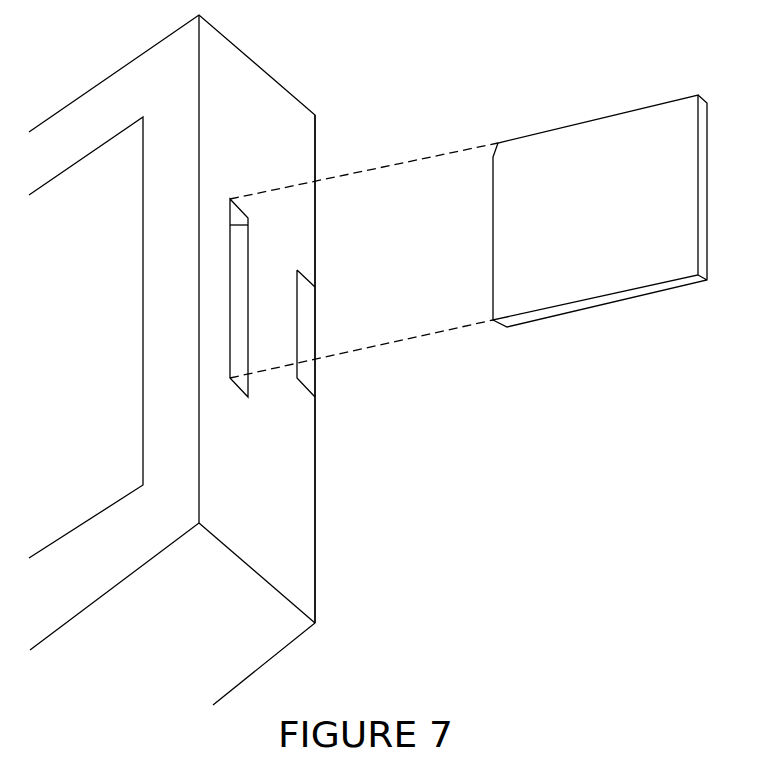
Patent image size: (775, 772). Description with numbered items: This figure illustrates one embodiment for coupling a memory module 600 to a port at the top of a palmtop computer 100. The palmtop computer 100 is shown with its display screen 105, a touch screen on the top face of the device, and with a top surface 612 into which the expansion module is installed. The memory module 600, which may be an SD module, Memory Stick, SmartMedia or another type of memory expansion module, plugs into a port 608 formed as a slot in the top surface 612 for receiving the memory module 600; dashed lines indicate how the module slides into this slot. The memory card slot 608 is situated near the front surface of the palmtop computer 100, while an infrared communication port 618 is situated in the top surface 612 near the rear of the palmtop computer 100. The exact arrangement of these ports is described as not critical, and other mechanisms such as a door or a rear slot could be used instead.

The palmtop computer 100 is at (217, 579).
The display screen 105 is at (108, 373).
The memory module 600 is at (687, 227).
The port 608 is at (248, 256).
The top surface 612 is at (305, 478).
The infrared communication port 618 is at (316, 302).